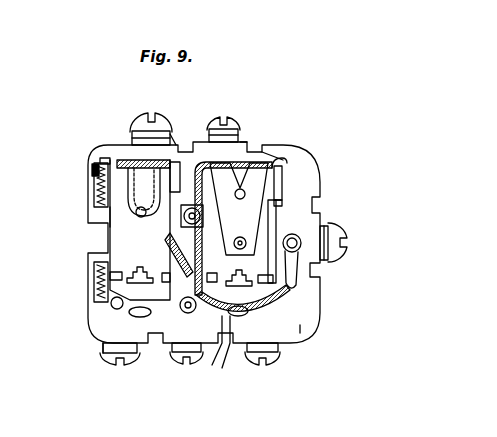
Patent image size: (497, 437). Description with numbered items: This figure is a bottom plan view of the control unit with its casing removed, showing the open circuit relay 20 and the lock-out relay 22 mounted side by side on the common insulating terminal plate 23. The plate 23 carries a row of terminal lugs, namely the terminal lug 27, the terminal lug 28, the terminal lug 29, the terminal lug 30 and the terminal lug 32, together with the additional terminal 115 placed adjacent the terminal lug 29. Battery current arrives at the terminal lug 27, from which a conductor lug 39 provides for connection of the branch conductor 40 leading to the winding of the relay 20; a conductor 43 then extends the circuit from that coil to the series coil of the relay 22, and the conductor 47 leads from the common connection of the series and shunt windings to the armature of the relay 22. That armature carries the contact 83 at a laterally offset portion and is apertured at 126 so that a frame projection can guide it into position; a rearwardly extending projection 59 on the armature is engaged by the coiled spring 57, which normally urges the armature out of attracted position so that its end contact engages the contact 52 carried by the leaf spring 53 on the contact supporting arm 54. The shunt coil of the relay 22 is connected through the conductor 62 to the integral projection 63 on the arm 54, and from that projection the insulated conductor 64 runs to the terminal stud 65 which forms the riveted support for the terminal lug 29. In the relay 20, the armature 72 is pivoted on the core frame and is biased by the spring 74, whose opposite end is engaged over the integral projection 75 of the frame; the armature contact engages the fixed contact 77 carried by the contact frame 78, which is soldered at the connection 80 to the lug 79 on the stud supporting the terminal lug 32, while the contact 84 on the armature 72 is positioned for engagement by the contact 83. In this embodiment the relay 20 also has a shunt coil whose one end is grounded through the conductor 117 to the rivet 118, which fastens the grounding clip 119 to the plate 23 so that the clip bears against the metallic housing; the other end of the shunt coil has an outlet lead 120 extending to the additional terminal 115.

The open circuit relay 20 is at (106, 241).
The lock-out relay 22 is at (300, 338).
The insulating terminal plate 23 is at (110, 143).
The terminal lug 27 is at (323, 228).
The terminal lug 28 is at (280, 352).
The terminal lug 29 is at (176, 364).
The terminal lug 30 is at (234, 142).
The terminal lug 32 is at (170, 134).
The conductor lug 39 is at (302, 265).
The conductor 40 is at (300, 325).
The conductor 43 is at (172, 257).
The conductor 47 is at (274, 280).
The contact 52 is at (264, 163).
The leaf spring 53 is at (241, 189).
The contact supporting arm 54 is at (280, 160).
The coiled spring 57 is at (216, 360).
The projection 59 is at (240, 317).
The conductor 62 is at (282, 200).
The integral projection 63 is at (288, 191).
The insulated conductor 64 is at (198, 170).
The terminal stud 65 is at (187, 313).
The armature 72 is at (115, 227).
The spring 74 is at (150, 337).
The integral projection 75 is at (110, 305).
The fixed contact 77 is at (144, 189).
The contact frame 78 is at (132, 160).
The lug 79 is at (194, 162).
The soldered connection 80 is at (143, 155).
The contact 83 is at (200, 217).
The contact 84 is at (184, 222).
The additional terminal 115 is at (106, 350).
The conductor 117 is at (100, 197).
The rivet 118 is at (106, 162).
The grounding clip 119 is at (92, 170).
The outlet lead 120 is at (95, 281).
The aperture 126 is at (224, 283).